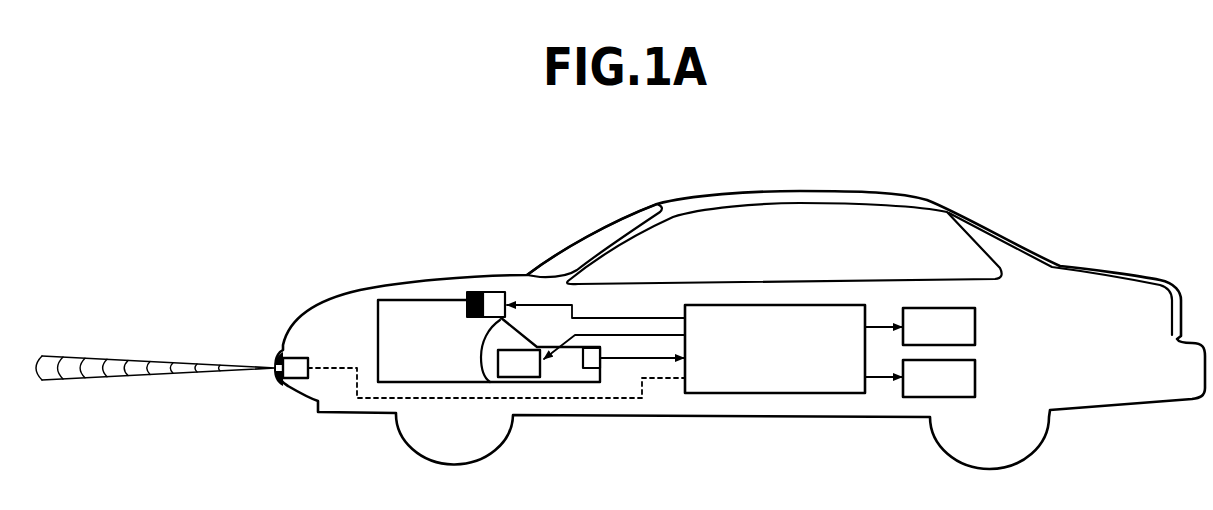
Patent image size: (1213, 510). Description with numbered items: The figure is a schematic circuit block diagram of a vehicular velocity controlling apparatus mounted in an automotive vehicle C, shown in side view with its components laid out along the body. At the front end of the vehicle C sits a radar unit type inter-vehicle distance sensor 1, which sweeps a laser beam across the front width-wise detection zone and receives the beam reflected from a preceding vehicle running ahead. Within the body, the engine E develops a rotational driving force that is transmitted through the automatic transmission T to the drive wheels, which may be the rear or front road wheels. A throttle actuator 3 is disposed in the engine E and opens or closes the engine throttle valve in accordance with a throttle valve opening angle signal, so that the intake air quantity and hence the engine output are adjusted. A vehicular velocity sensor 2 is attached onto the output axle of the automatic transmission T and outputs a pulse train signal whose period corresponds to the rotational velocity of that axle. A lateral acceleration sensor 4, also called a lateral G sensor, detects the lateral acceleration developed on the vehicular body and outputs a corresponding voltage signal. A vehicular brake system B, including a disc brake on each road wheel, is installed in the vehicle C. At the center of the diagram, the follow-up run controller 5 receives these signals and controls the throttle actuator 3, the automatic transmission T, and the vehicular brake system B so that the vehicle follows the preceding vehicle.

The inter-vehicle distance sensor 1 is at (295, 378).
The vehicular velocity sensor 2 is at (597, 368).
The throttle actuator 3 is at (497, 293).
The lateral acceleration sensor 4 is at (957, 306).
The follow-up run controller 5 is at (797, 393).
The vehicular brake system B is at (917, 397).
The automotive vehicle C is at (868, 173).
The engine E is at (414, 312).
The automatic transmission T is at (533, 377).